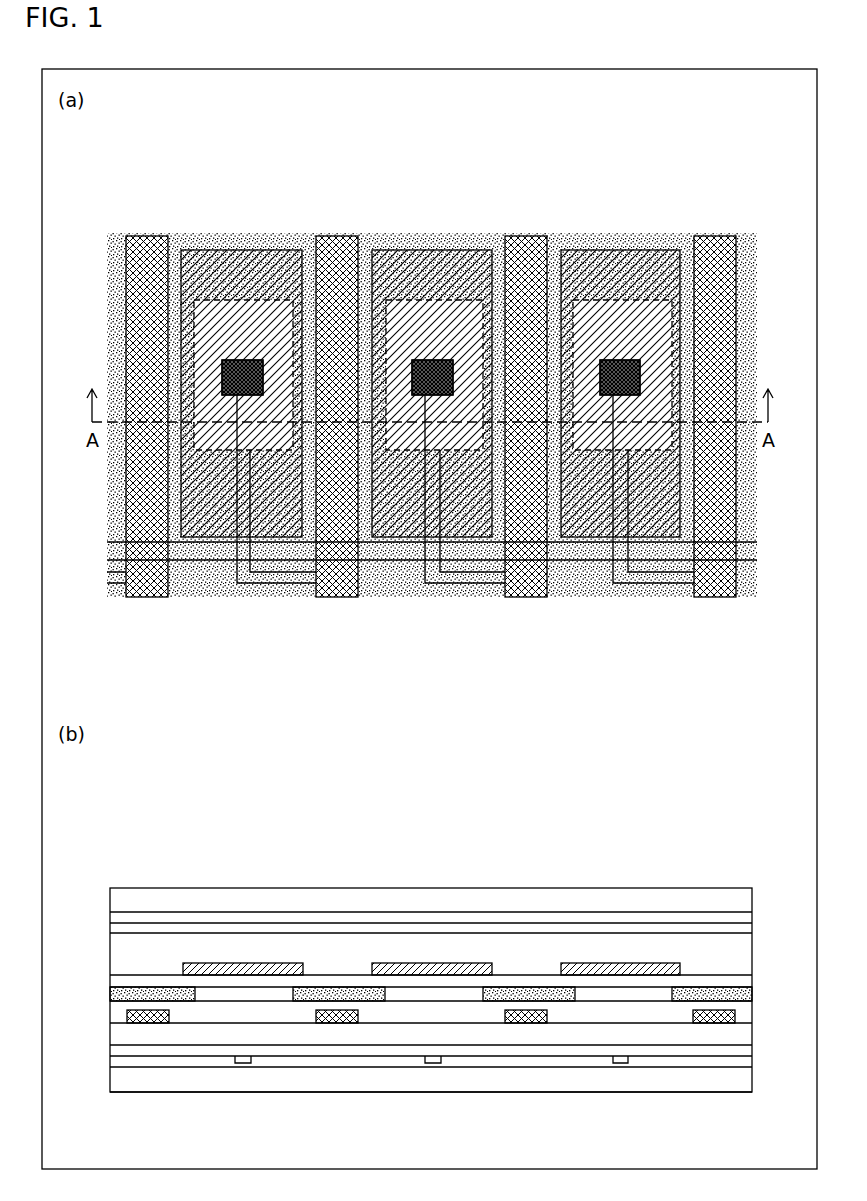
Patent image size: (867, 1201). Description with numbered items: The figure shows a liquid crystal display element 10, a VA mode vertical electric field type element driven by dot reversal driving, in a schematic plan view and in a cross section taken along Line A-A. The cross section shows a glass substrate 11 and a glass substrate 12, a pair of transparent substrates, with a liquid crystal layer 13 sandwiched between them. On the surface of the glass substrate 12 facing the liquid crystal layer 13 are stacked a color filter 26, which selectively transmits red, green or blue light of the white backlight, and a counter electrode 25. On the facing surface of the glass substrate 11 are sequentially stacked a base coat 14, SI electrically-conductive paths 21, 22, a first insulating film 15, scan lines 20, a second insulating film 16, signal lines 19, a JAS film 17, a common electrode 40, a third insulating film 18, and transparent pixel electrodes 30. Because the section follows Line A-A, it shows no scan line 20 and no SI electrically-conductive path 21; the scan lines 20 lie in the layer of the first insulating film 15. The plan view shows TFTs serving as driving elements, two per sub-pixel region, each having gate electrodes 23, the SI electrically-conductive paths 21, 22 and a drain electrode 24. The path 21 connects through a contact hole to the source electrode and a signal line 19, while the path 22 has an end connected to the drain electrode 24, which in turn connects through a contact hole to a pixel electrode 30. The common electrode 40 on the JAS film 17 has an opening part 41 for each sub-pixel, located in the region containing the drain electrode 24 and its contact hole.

The liquid crystal display element 10 is at (721, 182).
The glass substrate 11 is at (746, 1087).
The glass substrate 12 is at (746, 896).
The liquid crystal layer 13 is at (746, 958).
The base coat 14 is at (746, 1063).
The first insulating film 15 is at (746, 1050).
The second insulating film 16 is at (746, 1030).
The JAS film 17 is at (746, 1007).
The third insulating film 18 is at (746, 980).
The signal line 19 is at (337, 238).
The scan line 20 is at (577, 553).
The SI electrically-conductive path 21 is at (281, 575).
The SI electrically-conductive path 22 is at (192, 495).
The gate electrode 23 is at (230, 592).
The drain electrode 24 is at (222, 368).
The counter electrode 25 is at (746, 930).
The color filter 26 is at (746, 917).
The pixel electrode 30 is at (228, 252).
The common electrode 40 is at (172, 240).
The opening part 41 is at (278, 300).